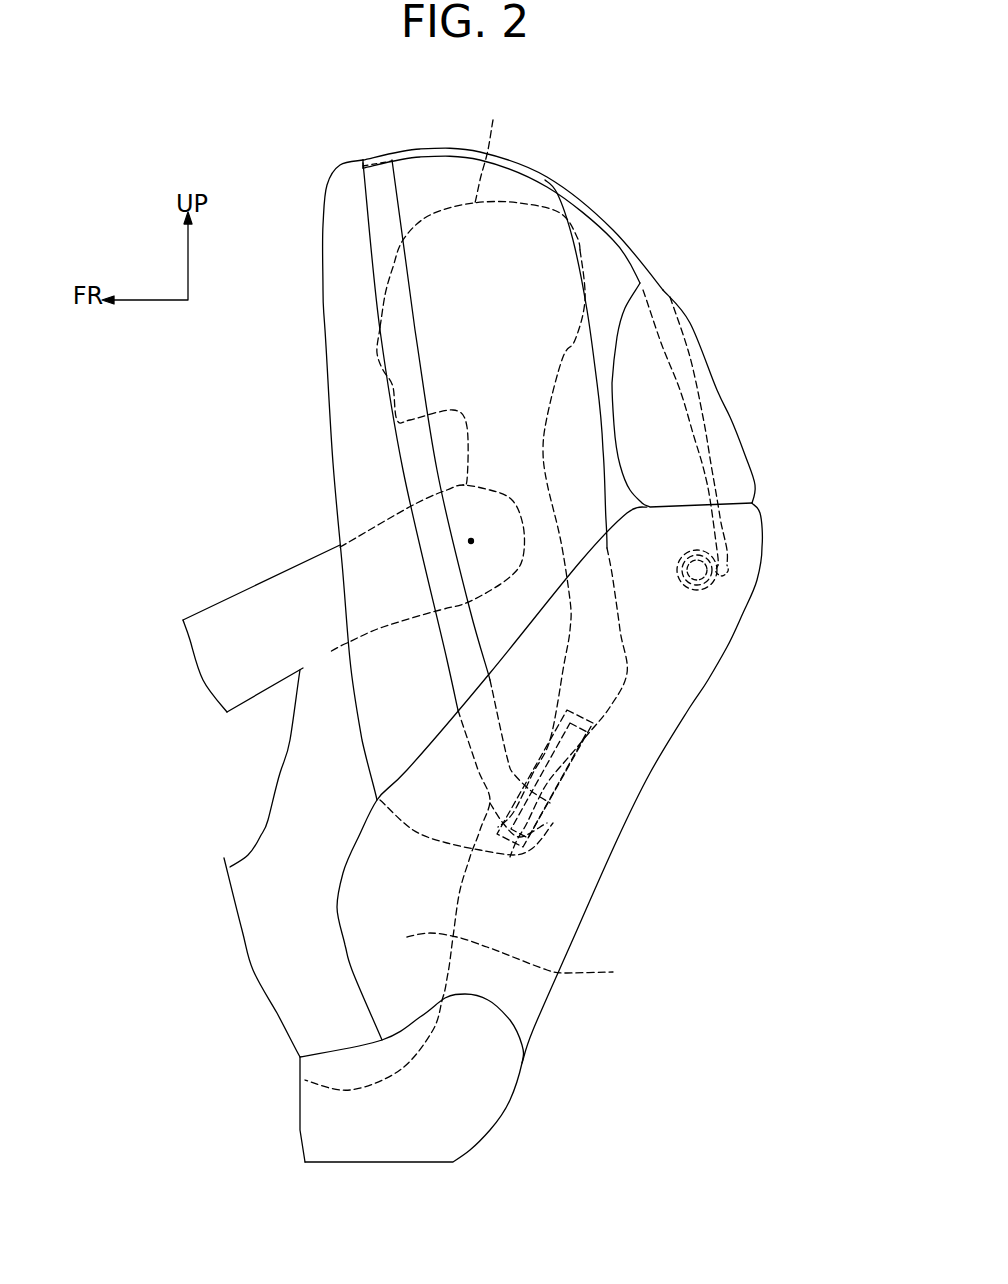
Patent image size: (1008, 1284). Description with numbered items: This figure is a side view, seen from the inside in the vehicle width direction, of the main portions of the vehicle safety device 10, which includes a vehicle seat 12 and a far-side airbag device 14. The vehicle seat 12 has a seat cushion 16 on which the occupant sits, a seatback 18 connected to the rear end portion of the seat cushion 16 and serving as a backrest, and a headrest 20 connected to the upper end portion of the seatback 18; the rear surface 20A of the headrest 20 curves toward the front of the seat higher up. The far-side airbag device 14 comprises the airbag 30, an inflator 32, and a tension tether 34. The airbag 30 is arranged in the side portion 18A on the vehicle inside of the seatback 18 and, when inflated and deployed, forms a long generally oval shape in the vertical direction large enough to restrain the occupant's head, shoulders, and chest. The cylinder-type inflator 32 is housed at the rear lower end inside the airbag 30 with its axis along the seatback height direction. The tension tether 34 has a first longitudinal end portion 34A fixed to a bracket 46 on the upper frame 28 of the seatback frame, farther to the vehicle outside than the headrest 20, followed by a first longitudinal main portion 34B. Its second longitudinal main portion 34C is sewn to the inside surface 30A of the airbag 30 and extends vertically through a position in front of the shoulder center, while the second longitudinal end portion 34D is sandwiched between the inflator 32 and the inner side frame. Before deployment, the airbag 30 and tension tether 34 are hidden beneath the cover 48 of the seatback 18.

The vehicle safety device 10 is at (208, 467).
The vehicle seat 12 is at (595, 903).
The far-side airbag device 14 is at (333, 139).
The seat cushion 16 is at (352, 1163).
The seatback 18 is at (713, 673).
The side portion 18A is at (424, 750).
The headrest 20 is at (745, 440).
The rear surface 20A is at (720, 377).
The upper frame 28 is at (681, 589).
The far-side airbag 30 is at (322, 268).
The inside surface 30A is at (352, 413).
The inflator 32 is at (577, 750).
The tension tether 34 is at (581, 200).
The first longitudinal end portion 34A is at (728, 545).
The first longitudinal main portion 34B is at (620, 235).
The second longitudinal main portion 34C is at (400, 468).
The second longitudinal end portion 34D is at (553, 823).
The bracket 46 is at (715, 580).
The cover 48 is at (663, 708).